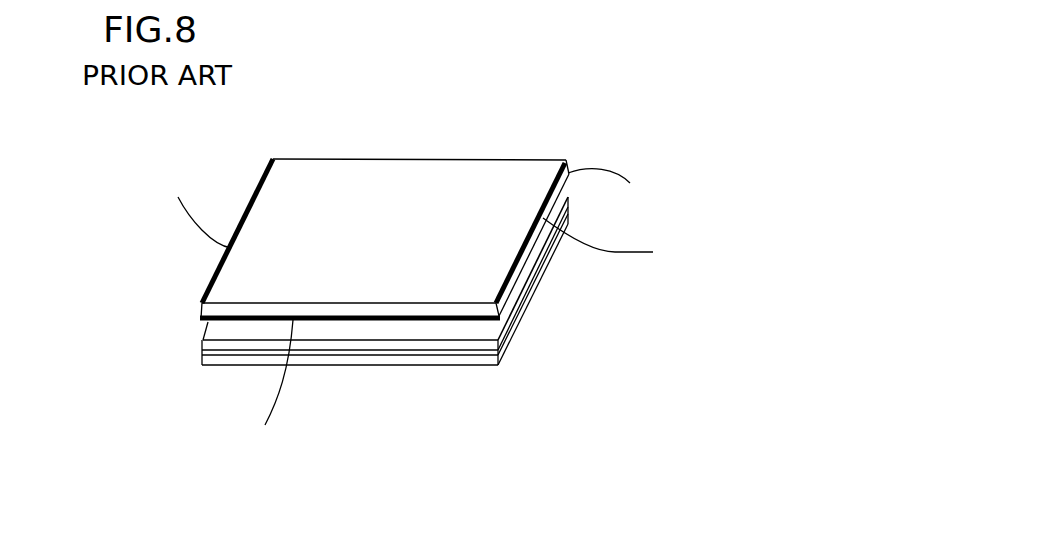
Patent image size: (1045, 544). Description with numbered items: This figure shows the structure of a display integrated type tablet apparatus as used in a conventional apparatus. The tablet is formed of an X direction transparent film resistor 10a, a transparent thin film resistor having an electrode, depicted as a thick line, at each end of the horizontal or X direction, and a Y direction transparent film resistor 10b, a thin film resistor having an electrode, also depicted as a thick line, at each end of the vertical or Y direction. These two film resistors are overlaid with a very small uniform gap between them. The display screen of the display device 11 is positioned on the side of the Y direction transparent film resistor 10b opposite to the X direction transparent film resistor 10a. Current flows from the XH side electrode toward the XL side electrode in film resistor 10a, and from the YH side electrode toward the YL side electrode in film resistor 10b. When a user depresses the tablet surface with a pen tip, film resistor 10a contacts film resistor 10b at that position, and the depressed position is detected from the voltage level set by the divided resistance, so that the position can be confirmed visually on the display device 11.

The X direction transparent film resistor 10a is at (440, 158).
The Y direction transparent film resistor 10b is at (520, 283).
The display device 11 is at (427, 333).